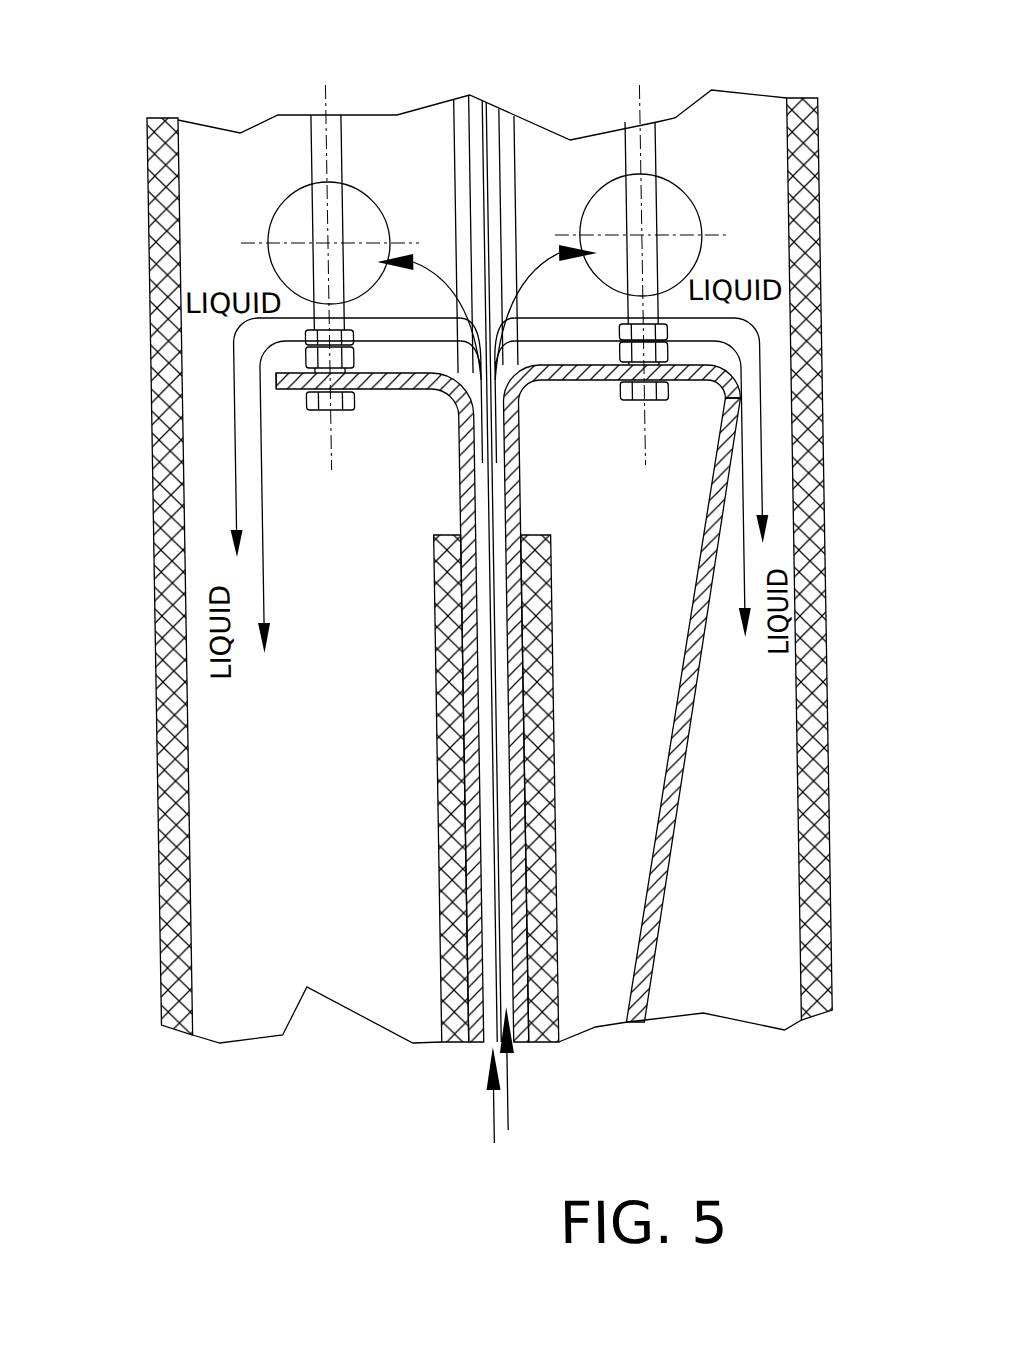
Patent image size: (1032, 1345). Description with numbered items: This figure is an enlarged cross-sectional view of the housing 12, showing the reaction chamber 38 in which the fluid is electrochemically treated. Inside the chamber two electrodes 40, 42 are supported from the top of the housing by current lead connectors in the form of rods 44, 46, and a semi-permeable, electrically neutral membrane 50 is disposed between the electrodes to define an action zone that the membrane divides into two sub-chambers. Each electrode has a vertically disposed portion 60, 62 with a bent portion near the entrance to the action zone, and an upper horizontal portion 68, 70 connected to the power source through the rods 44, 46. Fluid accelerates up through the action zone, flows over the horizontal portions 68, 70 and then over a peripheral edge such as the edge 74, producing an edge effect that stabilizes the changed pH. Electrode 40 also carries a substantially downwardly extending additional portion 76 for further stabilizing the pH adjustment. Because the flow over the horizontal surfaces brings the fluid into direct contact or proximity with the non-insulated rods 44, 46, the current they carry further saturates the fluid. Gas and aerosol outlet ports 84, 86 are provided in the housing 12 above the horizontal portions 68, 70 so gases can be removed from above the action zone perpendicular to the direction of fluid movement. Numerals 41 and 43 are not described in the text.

The housing 12 is at (850, 583).
The reaction chamber 38 is at (732, 918).
The electrode 40 is at (542, 490).
The gas feed tube 41 is at (491, 842).
The electrode 42 is at (424, 497).
The gas passage 43 is at (480, 842).
The rod 44 is at (652, 150).
The rod 46 is at (322, 142).
The semi-permeable membrane 50 is at (488, 227).
The vertically disposed portion 60 is at (517, 708).
The vertically disposed portion 62 is at (453, 702).
The upper horizontal portion 68 is at (579, 382).
The upper horizontal portion 70 is at (389, 390).
The peripheral edge 74 is at (278, 390).
The downwardly extending additional portion 76 is at (640, 932).
The gas and aerosol outlet port 84 is at (699, 253).
The gas and aerosol outlet port 86 is at (264, 253).